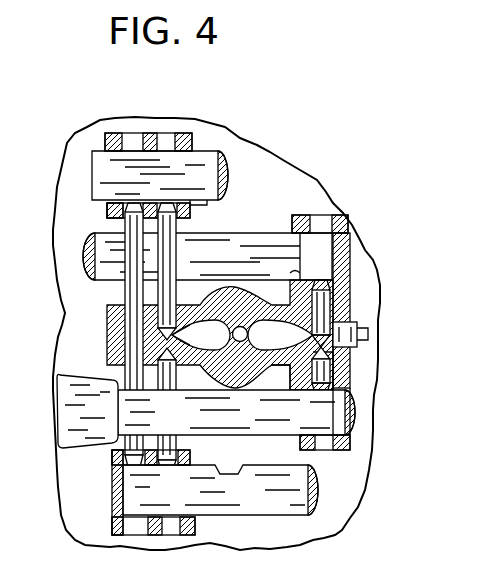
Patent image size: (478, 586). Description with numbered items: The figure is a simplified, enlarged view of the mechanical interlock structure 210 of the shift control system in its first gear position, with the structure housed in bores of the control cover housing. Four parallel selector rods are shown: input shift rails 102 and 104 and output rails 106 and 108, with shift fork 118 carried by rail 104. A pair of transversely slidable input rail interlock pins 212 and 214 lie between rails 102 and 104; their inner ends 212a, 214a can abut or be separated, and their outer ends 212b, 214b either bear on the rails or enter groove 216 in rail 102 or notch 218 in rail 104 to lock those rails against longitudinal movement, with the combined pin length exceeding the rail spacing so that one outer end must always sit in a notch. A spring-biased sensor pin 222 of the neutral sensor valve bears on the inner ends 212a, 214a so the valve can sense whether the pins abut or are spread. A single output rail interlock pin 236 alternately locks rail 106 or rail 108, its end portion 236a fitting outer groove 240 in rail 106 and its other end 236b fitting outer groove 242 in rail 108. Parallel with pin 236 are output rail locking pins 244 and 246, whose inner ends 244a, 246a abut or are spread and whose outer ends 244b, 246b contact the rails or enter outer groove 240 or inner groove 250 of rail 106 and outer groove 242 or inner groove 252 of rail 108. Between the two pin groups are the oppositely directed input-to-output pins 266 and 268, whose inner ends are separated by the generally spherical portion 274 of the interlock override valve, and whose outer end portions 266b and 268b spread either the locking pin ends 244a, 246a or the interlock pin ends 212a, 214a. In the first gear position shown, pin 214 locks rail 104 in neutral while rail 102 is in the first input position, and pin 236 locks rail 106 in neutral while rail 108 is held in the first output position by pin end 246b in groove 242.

The shift rail 102 is at (95, 260).
The shift rail 104 is at (352, 412).
The selector rod 106 is at (200, 153).
The selector rod 108 is at (320, 503).
The shift fork 118 is at (75, 405).
The mechanical interlock structure 210 is at (262, 140).
The input rail interlock pin 212 is at (350, 287).
The inner end 212a is at (345, 312).
The outer end 212b is at (335, 272).
The input rail interlock pin 214 is at (325, 378).
The inner end 214a is at (352, 352).
The outer end 214b is at (352, 392).
The groove 216 is at (290, 275).
The notch 218 is at (322, 411).
The sensor pin 222 is at (368, 334).
The output rail interlock pin 236 is at (120, 293).
The end portion 236a is at (107, 210).
The other end 236b is at (115, 465).
The outer groove 240 is at (125, 203).
The outer groove 242 is at (167, 473).
The output rail locking pin 244 is at (176, 252).
The inner end 244a is at (165, 330).
The outer end 244b is at (190, 214).
The output rail locking pin 246 is at (176, 421).
The inner end 246a is at (165, 356).
The outer end 246b is at (190, 462).
The inner groove 250 is at (195, 198).
The inner groove 252 is at (233, 472).
The input-to-output pin 266 is at (280, 335).
The outer end portion 266b is at (285, 370).
The input-to-output pin 268 is at (201, 335).
The outer end portion 268b is at (172, 335).
The spherical shaped portion 274 is at (237, 327).